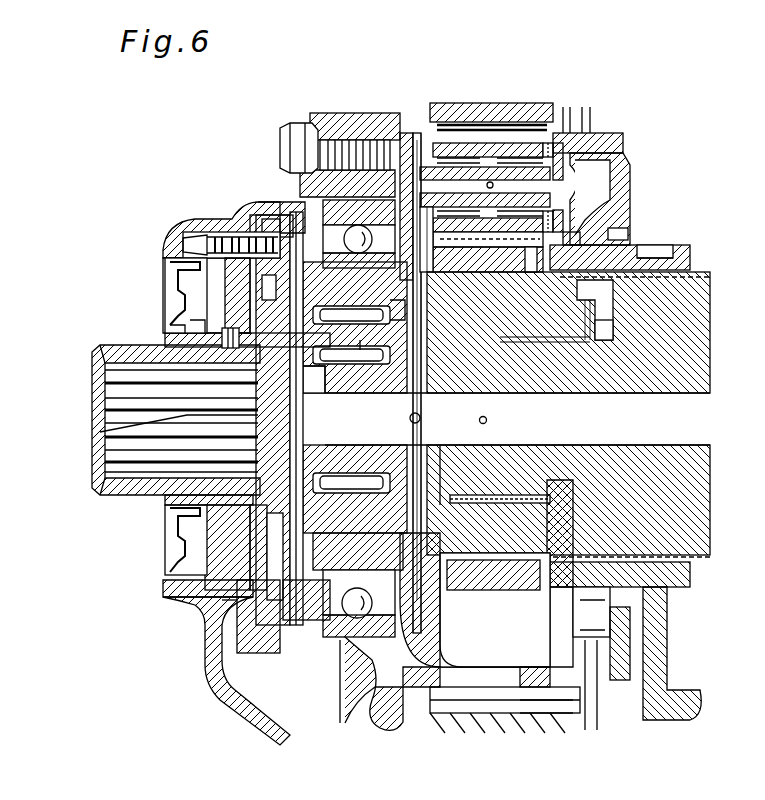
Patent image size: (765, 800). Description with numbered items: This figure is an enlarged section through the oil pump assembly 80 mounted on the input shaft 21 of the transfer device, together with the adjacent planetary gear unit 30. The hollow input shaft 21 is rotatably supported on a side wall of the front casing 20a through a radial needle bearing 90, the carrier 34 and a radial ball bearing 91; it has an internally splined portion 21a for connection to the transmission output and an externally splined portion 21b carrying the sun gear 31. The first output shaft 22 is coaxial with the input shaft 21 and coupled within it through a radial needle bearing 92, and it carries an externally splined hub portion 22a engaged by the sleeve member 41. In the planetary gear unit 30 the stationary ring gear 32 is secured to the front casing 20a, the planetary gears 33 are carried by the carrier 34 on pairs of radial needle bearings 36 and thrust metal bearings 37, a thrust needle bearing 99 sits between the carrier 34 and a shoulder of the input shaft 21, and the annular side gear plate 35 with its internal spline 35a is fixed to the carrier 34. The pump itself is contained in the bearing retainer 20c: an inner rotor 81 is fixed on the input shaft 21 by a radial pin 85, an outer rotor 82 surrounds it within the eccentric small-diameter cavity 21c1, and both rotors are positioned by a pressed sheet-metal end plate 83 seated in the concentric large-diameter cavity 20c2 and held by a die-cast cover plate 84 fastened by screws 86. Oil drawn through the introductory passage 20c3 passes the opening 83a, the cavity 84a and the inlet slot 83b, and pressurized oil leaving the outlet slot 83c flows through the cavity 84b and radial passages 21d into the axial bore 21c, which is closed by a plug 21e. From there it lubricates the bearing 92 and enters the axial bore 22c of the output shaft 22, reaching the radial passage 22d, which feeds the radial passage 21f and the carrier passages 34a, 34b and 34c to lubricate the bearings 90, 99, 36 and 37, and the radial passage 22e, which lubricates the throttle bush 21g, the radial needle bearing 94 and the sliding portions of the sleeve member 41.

The front casing 20a is at (345, 115).
The bearing retainer 20c is at (245, 202).
The cylindrical cavity of large diameter 20c2 is at (275, 220).
The introductory passage 20c3 is at (225, 653).
The input shaft 21 is at (92, 352).
The internally splined portion 21a is at (105, 400).
The externally splined portion 21b is at (556, 500).
The axial bore 21c is at (292, 465).
The cylindrical cavity of small diameter 21c1 is at (235, 548).
The radial passages 21d is at (295, 350).
The plug 21e is at (105, 432).
The radial passage 21f is at (402, 345).
The throttle bush 21g is at (556, 340).
The first output shaft 22 is at (688, 330).
The externally splined hub portion 22a is at (655, 480).
The axial bore 22c is at (640, 438).
The radial passage 22d is at (418, 360).
The radial passage 22e is at (499, 411).
The planetary gear unit 30 is at (575, 120).
The sun gear 31 is at (487, 595).
The stationary ring gear 32 is at (475, 713).
The planetary gears 33 is at (548, 143).
The carrier 34 is at (303, 565).
The passage 34a is at (406, 133).
The passage 34b is at (448, 195).
The passage 34c is at (505, 200).
The annular side gear plate 35 is at (628, 215).
The internal spline 35a is at (628, 236).
The radial needle bearings 36 is at (480, 165).
The thrust metal bearings 37 is at (438, 135).
The sleeve member 41 is at (680, 255).
The oil pump assembly 80 is at (215, 232).
The inner rotor 81 is at (185, 313).
The outer rotor 82 is at (190, 283).
The end plate 83 is at (262, 618).
The opening 83a is at (240, 605).
The semi-circular inlet slot 83b is at (185, 520).
The semi-circular outlet slot 83c is at (265, 298).
The cover plate 84 is at (290, 650).
The semi-circular cavity 84a is at (270, 580).
The semi-circular cavity 84b is at (240, 238).
The radial pin 85 is at (222, 340).
The screws 86 is at (292, 262).
The radial needle bearing 90 is at (362, 475).
The radial ball bearing 91 is at (370, 615).
The radial needle bearing 92 is at (362, 352).
The radial needle bearing 94 is at (598, 340).
The thrust needle bearing 99 is at (433, 495).